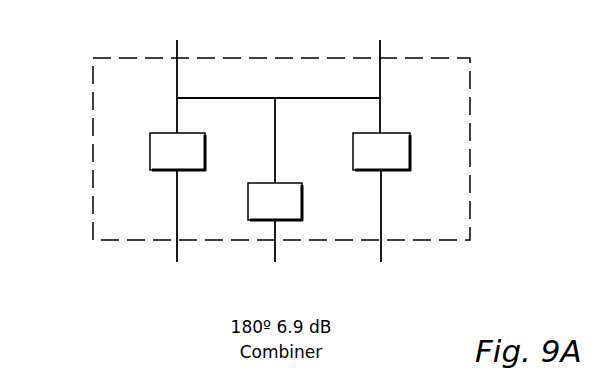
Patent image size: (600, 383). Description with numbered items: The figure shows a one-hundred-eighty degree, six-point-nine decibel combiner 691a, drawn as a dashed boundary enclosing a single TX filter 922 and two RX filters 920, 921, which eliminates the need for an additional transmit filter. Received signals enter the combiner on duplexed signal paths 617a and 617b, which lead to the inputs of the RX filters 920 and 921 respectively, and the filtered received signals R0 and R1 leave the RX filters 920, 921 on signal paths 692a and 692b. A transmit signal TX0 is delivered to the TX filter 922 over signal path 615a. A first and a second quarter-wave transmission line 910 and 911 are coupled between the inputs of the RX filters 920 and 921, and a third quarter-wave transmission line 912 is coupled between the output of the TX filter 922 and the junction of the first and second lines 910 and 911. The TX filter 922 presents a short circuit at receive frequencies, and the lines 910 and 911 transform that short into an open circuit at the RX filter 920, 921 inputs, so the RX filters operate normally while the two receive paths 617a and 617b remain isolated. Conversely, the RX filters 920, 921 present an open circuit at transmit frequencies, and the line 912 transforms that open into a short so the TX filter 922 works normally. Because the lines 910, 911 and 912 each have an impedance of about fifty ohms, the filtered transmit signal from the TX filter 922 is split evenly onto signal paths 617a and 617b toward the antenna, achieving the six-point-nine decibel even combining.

The 180° 6.9 dB combiner 691a is at (95, 60).
The signal path 617a is at (177, 44).
The signal path 617b is at (380, 45).
The λ/4 transmission line 910 is at (243, 97).
The λ/4 transmission line 911 is at (334, 97).
The λ/4 transmission line 912 is at (268, 155).
The RX filter 920 is at (160, 152).
The RX filter 921 is at (406, 156).
The TX filter 922 is at (252, 198).
The signal path 692a is at (177, 250).
The signal path 692b is at (381, 250).
The signal path 615a is at (275, 255).